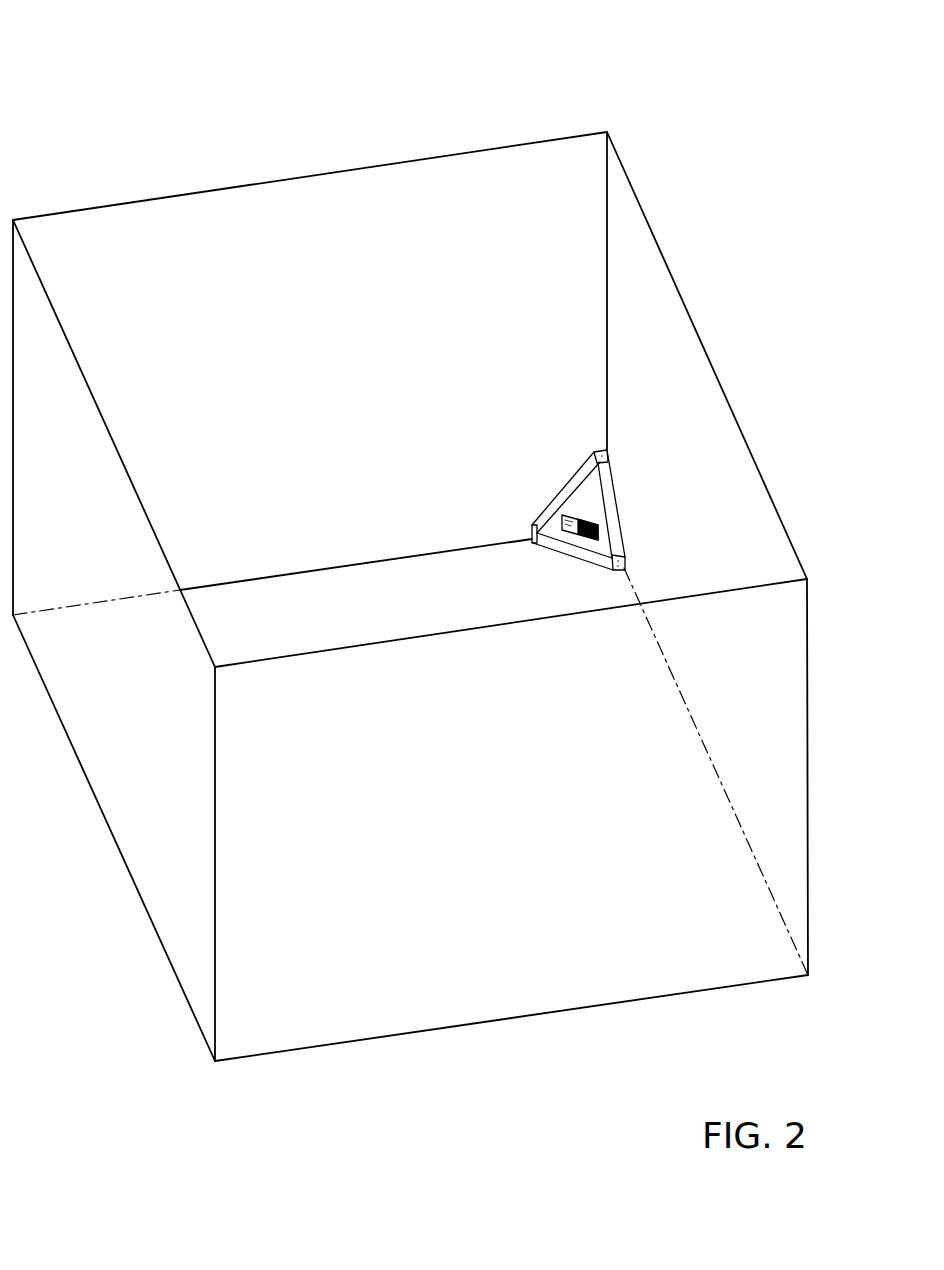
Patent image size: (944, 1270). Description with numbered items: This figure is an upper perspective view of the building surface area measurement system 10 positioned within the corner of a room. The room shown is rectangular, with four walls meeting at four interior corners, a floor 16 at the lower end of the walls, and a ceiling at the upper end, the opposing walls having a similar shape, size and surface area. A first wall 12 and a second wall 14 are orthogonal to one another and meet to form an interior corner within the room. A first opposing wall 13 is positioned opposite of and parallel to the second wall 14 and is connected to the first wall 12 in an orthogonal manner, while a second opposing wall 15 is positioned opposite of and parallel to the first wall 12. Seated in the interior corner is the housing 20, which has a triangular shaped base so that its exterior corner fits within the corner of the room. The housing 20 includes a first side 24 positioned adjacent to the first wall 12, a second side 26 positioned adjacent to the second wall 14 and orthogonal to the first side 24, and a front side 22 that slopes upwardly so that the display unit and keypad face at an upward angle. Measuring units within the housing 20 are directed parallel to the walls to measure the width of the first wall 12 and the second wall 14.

The building surface area measurement system 10 is at (130, 68).
The first wall 12 is at (690, 405).
The first opposing wall 13 is at (408, 945).
The second wall 14 is at (375, 237).
The second opposing wall 15 is at (167, 817).
The floor 16 is at (405, 613).
The housing 20 is at (560, 474).
The front side 22 is at (590, 505).
The first side 24 is at (623, 518).
The second side 26 is at (547, 507).